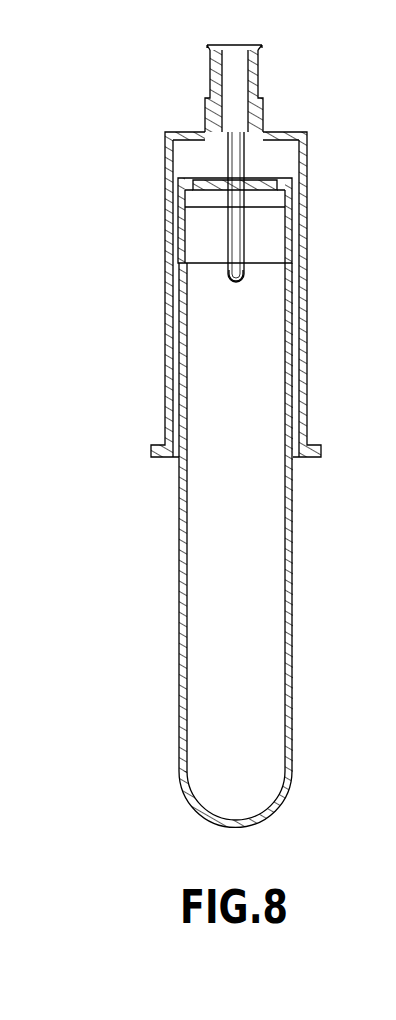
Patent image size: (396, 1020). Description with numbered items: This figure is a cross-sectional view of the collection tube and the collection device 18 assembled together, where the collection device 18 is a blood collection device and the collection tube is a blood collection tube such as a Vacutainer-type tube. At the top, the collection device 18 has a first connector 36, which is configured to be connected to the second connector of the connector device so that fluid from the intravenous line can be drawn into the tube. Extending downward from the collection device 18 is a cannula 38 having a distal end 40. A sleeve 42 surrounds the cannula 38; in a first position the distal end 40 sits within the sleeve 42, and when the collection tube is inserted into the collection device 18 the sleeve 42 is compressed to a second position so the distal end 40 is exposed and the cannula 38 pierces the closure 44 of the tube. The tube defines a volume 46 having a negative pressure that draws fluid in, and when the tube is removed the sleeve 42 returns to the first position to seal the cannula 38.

The first connector 36 is at (255, 68).
The collection device 18 is at (302, 148).
The closure 44 is at (270, 196).
The sleeve 42 is at (228, 222).
The cannula 38 is at (244, 222).
The distal end 40 is at (242, 268).
The volume 46 is at (253, 518).